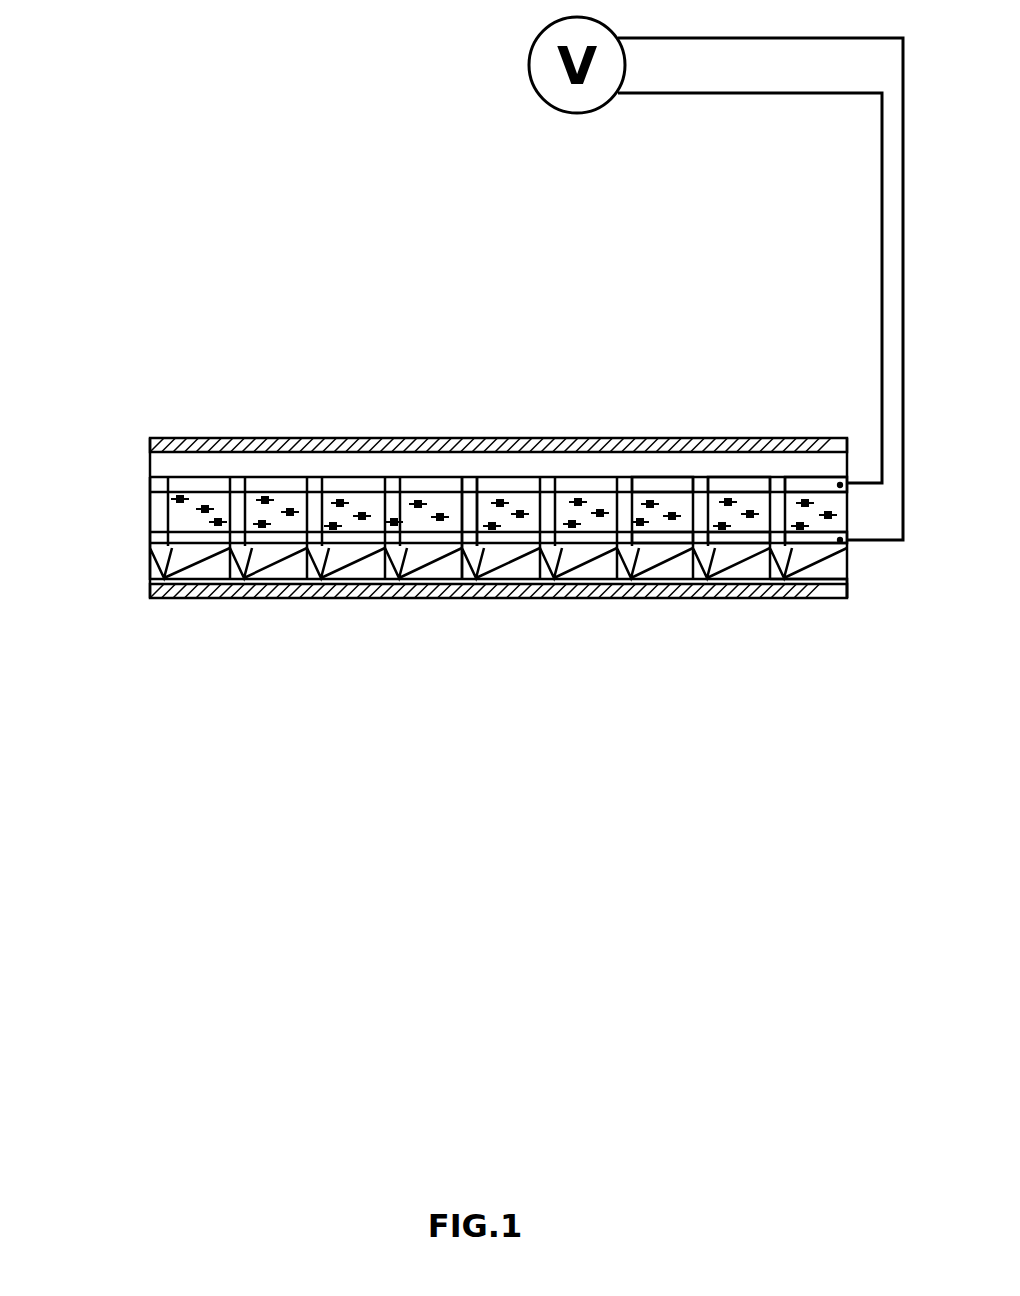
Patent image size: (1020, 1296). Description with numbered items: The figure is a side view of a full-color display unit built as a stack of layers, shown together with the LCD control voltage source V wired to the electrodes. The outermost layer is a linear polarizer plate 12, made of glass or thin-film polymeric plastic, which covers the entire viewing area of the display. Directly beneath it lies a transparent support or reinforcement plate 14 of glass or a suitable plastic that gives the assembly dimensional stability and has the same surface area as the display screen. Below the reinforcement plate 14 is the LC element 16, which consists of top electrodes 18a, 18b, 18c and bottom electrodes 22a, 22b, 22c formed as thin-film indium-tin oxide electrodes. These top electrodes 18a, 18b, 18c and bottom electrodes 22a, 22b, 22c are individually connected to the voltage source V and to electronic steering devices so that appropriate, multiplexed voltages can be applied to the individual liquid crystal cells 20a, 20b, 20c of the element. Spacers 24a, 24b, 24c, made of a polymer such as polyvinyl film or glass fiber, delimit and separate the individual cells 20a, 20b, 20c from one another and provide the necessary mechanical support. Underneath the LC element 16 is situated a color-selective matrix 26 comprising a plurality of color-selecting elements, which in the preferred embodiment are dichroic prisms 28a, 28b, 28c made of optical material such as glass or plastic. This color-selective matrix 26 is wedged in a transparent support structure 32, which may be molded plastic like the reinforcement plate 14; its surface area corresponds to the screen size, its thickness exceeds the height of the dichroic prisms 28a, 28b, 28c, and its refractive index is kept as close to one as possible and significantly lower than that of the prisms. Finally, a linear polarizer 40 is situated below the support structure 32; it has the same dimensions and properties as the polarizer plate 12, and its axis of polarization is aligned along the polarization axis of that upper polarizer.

The linear polarizer plate 12 is at (590, 447).
The transparent support or reinforcement plate 14 is at (250, 465).
The LC element 16 is at (132, 491).
The top electrode 18a is at (808, 486).
The top electrode 18b is at (700, 486).
The top electrode 18c is at (668, 486).
The liquid crystal cell 20a is at (165, 497).
The liquid crystal cell 20b is at (198, 505).
The liquid crystal cell 20c is at (228, 507).
The bottom electrode 22a is at (820, 540).
The bottom electrode 22b is at (778, 540).
The bottom electrode 22c is at (737, 540).
The spacer 24a is at (383, 492).
The spacer 24b is at (399, 494).
The spacer 24c is at (466, 494).
The color-selective matrix 26 is at (866, 582).
The dichroic prism 28a is at (258, 562).
The dichroic prism 28b is at (335, 565).
The dichroic prism 28c is at (412, 563).
The transparent support structure 32 is at (578, 575).
The linear polarizer 40 is at (497, 595).